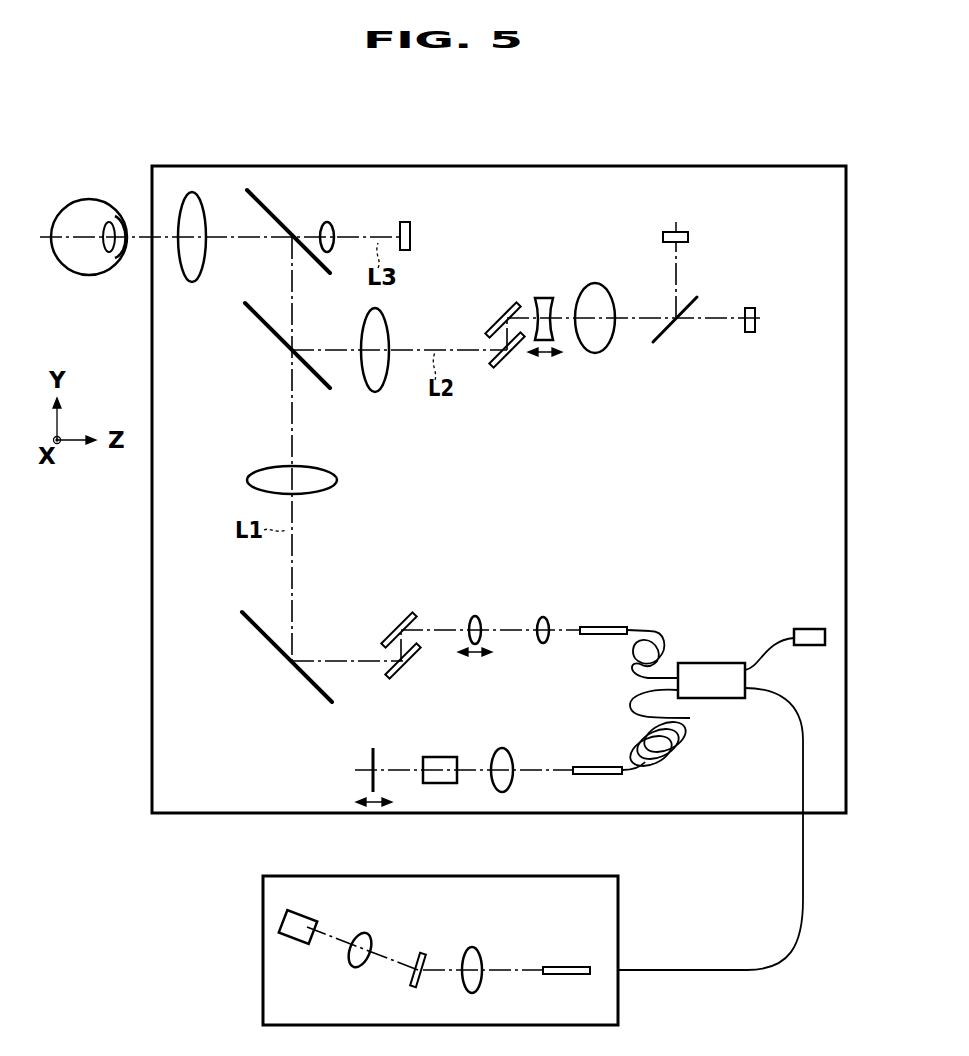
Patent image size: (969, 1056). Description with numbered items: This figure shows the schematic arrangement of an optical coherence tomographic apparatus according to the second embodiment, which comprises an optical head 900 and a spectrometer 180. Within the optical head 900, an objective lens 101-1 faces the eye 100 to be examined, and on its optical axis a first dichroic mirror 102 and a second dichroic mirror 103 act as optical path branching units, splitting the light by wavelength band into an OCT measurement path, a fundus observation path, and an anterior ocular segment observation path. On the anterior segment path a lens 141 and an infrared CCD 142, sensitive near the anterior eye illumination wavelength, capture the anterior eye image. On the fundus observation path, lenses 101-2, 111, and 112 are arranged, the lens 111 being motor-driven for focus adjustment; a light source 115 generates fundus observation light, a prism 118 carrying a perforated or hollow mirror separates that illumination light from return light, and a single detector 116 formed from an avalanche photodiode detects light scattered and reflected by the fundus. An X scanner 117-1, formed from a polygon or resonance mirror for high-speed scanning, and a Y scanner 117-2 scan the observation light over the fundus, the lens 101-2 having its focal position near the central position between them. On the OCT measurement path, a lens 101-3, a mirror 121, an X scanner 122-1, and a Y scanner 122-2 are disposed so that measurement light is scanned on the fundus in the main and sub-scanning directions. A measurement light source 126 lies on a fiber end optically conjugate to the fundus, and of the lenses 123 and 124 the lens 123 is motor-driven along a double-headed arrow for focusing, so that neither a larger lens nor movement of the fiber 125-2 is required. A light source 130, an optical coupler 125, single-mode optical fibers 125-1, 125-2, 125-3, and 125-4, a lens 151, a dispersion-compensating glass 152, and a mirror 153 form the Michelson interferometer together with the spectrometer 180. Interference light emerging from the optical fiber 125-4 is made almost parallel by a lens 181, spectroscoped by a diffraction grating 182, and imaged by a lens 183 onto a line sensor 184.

The optical head 900 is at (535, 166).
The eye to be examined 100 is at (88, 199).
The objective lens 101-1 is at (195, 192).
The lens 101-2 is at (388, 329).
The lens 101-3 is at (255, 471).
The first dichroic mirror 102 is at (260, 203).
The second dichroic mirror 103 is at (262, 320).
The lens 141 is at (333, 224).
The infrared CCD 142 is at (405, 222).
The Y scanner 117-2 is at (503, 308).
The X scanner 117-1 is at (512, 359).
The lens 111 is at (545, 298).
The lens 112 is at (596, 283).
The single detector 116 is at (685, 231).
The prism 118 is at (690, 298).
The light source 115 is at (750, 308).
The mirror 121 is at (250, 620).
The X scanner 122-1 is at (412, 667).
The Y scanner 122-2 is at (389, 635).
The lens 123 is at (475, 616).
The lens 124 is at (543, 617).
The measurement light source 126 is at (600, 627).
The optical coupler 125 is at (705, 663).
The optical fiber 125-1 is at (770, 642).
The optical fiber 125-2 is at (660, 630).
The optical fiber 125-3 is at (630, 708).
The optical fiber 125-4 is at (803, 772).
The light source 130 is at (808, 629).
The lens 151 is at (500, 748).
The dispersion-compensating glass 152 is at (440, 757).
The mirror 153 is at (372, 758).
The spectrometer 180 is at (575, 876).
The lens 181 is at (472, 947).
The diffraction grating 182 is at (420, 953).
The lens 183 is at (366, 934).
The line sensor 184 is at (306, 916).